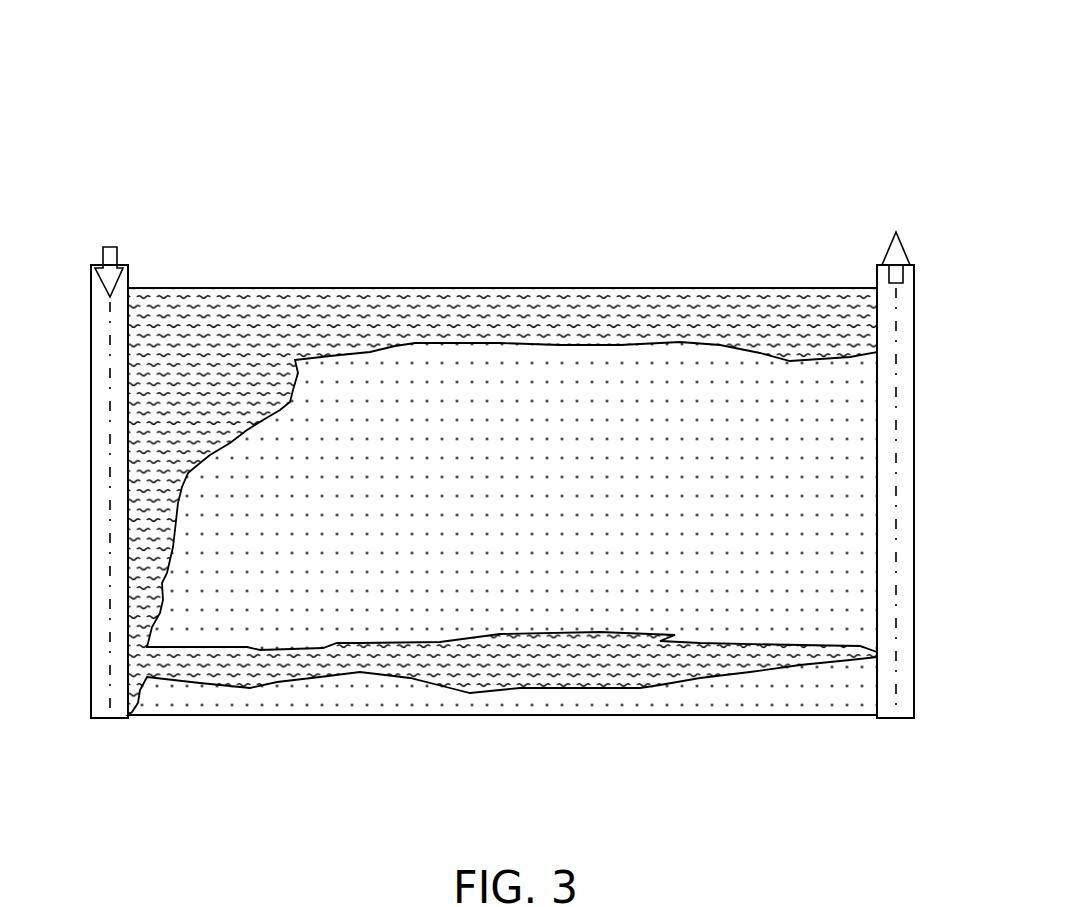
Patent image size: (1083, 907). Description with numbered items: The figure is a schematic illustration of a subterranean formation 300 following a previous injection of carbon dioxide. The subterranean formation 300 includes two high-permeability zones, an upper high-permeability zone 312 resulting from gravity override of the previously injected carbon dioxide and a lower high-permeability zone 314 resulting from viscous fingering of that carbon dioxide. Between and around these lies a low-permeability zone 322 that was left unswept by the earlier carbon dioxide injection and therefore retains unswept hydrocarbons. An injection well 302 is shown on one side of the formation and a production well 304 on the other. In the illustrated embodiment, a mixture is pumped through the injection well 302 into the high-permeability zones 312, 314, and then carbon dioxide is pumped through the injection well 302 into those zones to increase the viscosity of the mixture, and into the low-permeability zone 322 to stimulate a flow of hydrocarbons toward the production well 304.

The subterranean formation 300 is at (772, 113).
The injection well 302 is at (110, 245).
The production well 304 is at (892, 230).
The high-permeability zone 312 is at (503, 315).
The high-permeability zone 314 is at (626, 668).
The low-permeability zone 322 is at (557, 518).